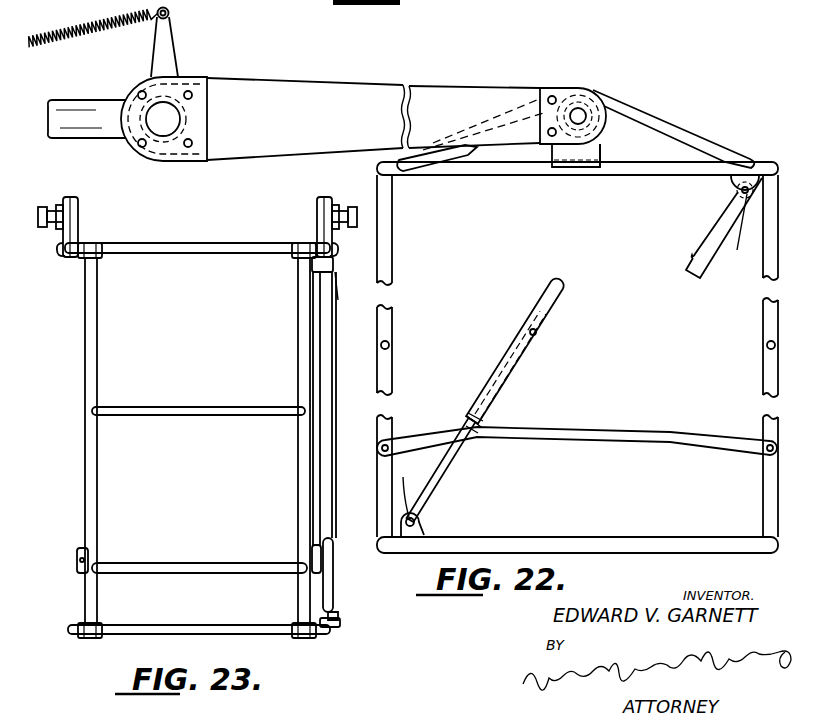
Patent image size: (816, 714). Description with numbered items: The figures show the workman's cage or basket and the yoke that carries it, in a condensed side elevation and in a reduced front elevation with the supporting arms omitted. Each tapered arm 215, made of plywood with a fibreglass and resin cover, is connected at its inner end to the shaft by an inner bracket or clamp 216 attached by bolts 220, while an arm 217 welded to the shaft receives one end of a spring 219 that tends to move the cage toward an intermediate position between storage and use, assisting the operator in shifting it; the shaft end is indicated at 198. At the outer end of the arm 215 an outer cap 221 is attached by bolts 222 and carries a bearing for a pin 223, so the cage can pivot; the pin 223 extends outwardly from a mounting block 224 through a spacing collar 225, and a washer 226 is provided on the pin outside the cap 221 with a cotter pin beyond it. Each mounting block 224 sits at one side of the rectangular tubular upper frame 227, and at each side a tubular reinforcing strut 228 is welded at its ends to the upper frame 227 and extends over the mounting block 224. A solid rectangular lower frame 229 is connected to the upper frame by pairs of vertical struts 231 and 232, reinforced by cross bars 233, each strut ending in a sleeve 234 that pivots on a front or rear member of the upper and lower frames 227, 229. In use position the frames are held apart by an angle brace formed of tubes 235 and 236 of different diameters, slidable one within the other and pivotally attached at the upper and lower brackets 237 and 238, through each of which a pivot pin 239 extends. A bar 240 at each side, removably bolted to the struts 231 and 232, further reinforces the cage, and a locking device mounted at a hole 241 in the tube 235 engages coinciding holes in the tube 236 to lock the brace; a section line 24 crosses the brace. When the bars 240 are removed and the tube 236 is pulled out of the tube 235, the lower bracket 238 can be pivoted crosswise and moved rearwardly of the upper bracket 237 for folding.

In FIG. 22, the section line 24- 24 is at (518, 283).
In FIG. 22, the handle shaft 198 is at (90, 104).
In FIG. 22, the tapered arm 215 is at (366, 84).
In FIG. 22, the bracket or cap 216 is at (198, 77).
In FIG. 22, the arm 217 is at (170, 26).
In FIG. 22, the spring 219 is at (51, 4).
In FIG. 22, the bolts 220 is at (192, 96).
In FIG. 22, the outer cap 221 is at (548, 86).
In FIG. 22, the bolts 222 is at (547, 100).
In FIG. 22, the pin 223 is at (582, 110).
In FIG. 23, the pin 223 is at (43, 227).
In FIG. 22, the mounting block 224 is at (601, 143).
In FIG. 23, the mounting block 224 is at (79, 216).
In FIG. 23, the spacing collar 225 is at (62, 250).
In FIG. 23, the washer 226 is at (38, 210).
In FIG. 22, the upper frame 227 is at (622, 172).
In FIG. 23, the upper frame 227 is at (112, 254).
In FIG. 22, the reinforcing strut 228 is at (672, 128).
In FIG. 23, the reinforcing strut 228 is at (78, 200).
In FIG. 22, the lower frame 229 is at (642, 536).
In FIG. 23, the lower frame 229 is at (182, 633).
In FIG. 22, the vertical strut 231 is at (761, 284).
In FIG. 23, the vertical strut 231 is at (97, 480).
In FIG. 22, the vertical strut 232 is at (390, 265).
In FIG. 23, the cross bar 233 is at (249, 406).
In FIG. 23, the sleeve 234 is at (300, 257).
In FIG. 22, the tube 235 is at (695, 256).
In FIG. 23, the tube 235 is at (333, 395).
In FIG. 22, the tube 236 is at (441, 482).
In FIG. 23, the tube 236 is at (334, 578).
In FIG. 22, the upper bracket 237 is at (735, 182).
In FIG. 23, the upper bracket 237 is at (333, 262).
In FIG. 22, the lower bracket 238 is at (421, 520).
In FIG. 23, the lower bracket 238 is at (337, 627).
In FIG. 22, the pivot pin 239 is at (576, 355).
In FIG. 23, the pivot pin 239 is at (338, 282).
In FIG. 22, the bar 240 is at (616, 430).
In FIG. 23, the bar 240 is at (78, 550).
In FIG. 22, the hole 241 is at (536, 334).